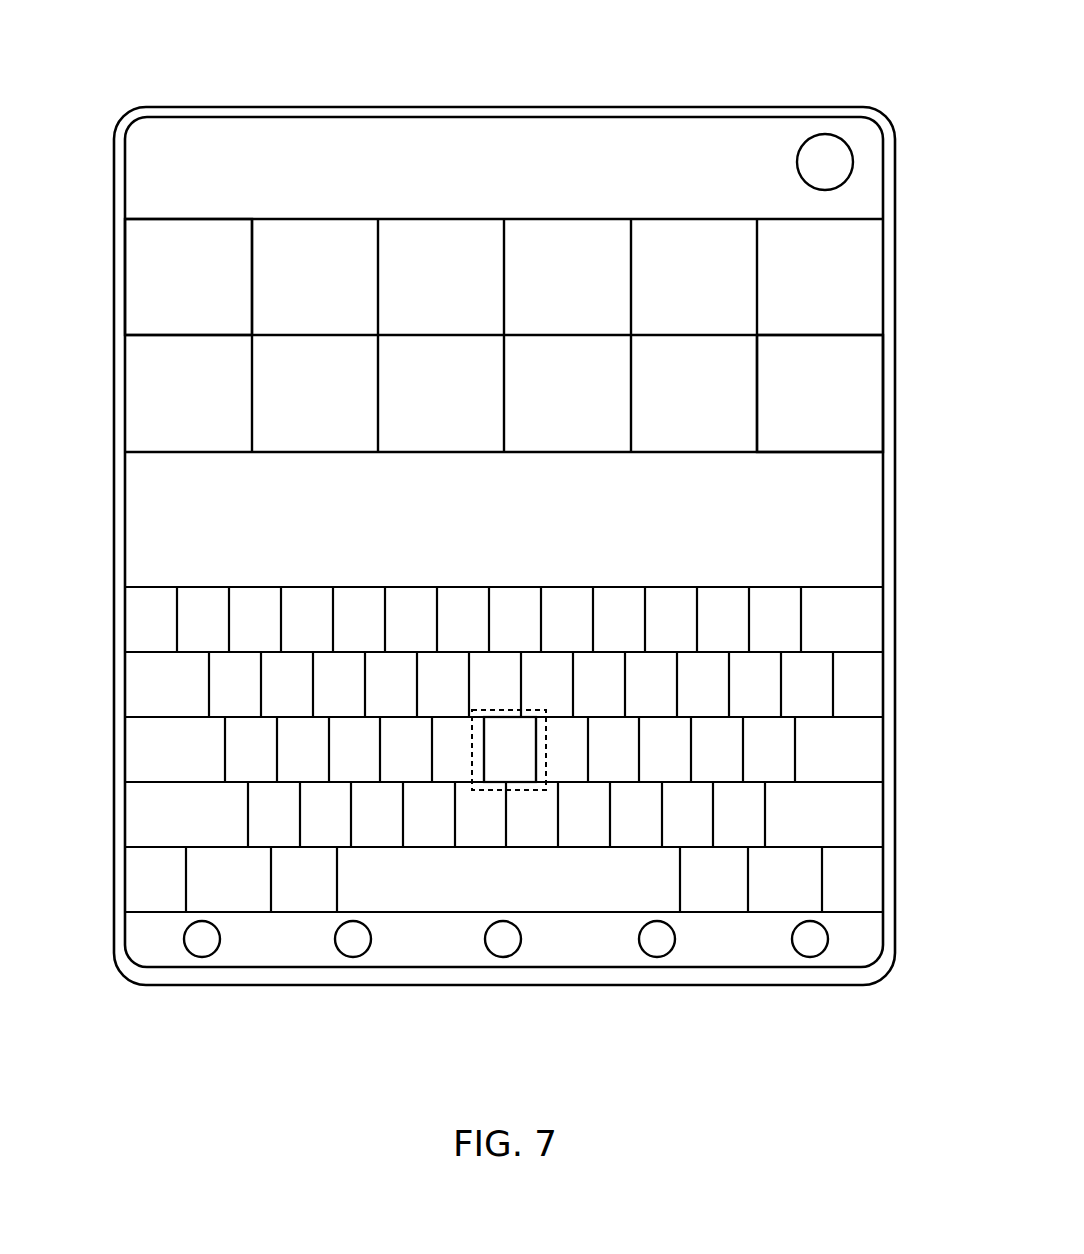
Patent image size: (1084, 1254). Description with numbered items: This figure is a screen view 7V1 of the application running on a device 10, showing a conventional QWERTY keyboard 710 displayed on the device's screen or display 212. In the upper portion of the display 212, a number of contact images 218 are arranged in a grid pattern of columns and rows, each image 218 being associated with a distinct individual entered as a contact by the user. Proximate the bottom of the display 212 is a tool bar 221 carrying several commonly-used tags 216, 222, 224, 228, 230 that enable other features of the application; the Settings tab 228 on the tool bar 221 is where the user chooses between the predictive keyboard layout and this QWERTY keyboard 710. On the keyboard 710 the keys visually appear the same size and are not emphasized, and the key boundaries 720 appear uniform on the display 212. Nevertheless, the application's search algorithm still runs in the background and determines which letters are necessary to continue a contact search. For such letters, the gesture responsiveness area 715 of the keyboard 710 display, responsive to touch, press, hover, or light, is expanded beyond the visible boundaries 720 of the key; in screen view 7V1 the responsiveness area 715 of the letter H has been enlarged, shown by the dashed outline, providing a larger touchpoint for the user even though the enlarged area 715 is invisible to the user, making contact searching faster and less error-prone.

The device 10 is at (307, 107).
The screen view 7V1 is at (774, 64).
The display 212 is at (848, 280).
The tag 216 is at (855, 163).
The image 218 is at (152, 262).
The tool bar 221 is at (503, 974).
The tag 222 is at (352, 943).
The tag 224 is at (502, 938).
The Settings tab 228 is at (658, 940).
The tag 230 is at (812, 938).
The QWERTY keyboard 710 is at (539, 714).
The gesture responsiveness area 715 is at (512, 708).
The key boundaries 720 is at (658, 587).